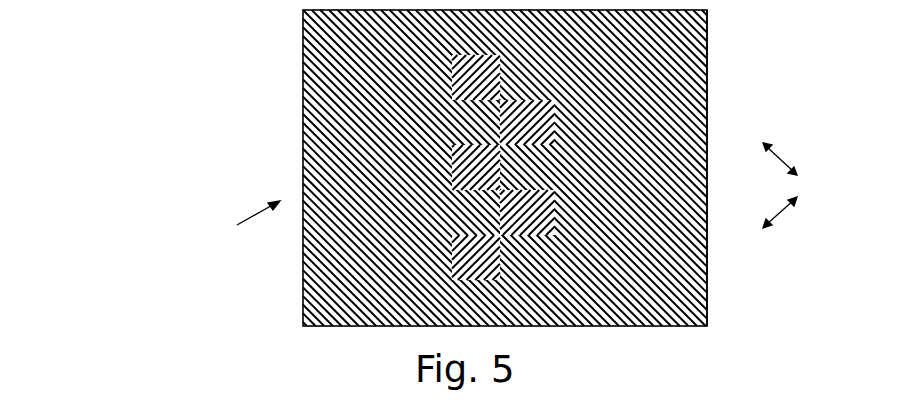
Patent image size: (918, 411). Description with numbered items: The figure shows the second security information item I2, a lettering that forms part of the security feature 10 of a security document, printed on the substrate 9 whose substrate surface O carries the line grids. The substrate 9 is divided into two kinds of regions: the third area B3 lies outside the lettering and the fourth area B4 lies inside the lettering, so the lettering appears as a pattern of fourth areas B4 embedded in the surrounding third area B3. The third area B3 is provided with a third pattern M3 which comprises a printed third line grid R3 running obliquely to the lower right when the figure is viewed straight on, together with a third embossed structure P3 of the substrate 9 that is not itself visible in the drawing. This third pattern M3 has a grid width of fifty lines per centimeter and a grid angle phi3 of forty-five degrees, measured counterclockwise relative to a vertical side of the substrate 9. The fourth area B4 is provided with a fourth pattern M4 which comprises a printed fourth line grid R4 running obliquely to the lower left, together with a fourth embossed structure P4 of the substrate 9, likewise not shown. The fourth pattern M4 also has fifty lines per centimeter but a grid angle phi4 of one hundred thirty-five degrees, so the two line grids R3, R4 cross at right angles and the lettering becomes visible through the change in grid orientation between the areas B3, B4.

The substrate 9 is at (560, 163).
The substrate surface O is at (672, 66).
The security feature 10 is at (705, 115).
The third area B3 is at (376, 168).
The third pattern M3 is at (376, 168).
The third line grid R3 is at (376, 168).
The third embossed structure P3 is at (348, 95).
The fourth area B4 is at (300, 167).
The fourth pattern M4 is at (300, 167).
The fourth line grid R4 is at (300, 167).
The fourth embossed structure P4 is at (456, 174).
The second security information item I2 is at (246, 216).
The grid angle phi3 is at (818, 158).
The grid angle phi4 is at (818, 211).